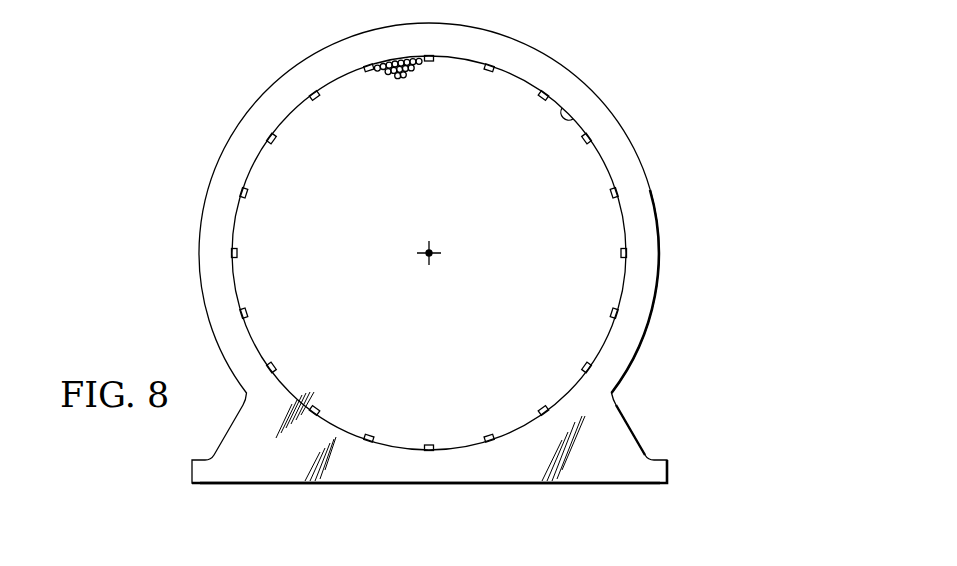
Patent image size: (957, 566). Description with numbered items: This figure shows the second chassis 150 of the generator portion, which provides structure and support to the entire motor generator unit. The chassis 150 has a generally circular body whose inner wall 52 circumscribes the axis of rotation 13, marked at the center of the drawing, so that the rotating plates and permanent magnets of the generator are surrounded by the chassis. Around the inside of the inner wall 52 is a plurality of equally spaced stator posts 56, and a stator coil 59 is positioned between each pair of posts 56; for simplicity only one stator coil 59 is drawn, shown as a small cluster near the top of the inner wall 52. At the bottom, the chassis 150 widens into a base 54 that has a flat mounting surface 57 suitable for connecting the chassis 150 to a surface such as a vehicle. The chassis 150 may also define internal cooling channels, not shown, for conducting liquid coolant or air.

The second chassis 150 is at (573, 52).
The inner wall 52 is at (577, 121).
The stator coil 59 is at (397, 70).
The axis of rotation 13 is at (436, 247).
The stator posts 56 is at (584, 366).
The base 54 is at (600, 447).
The mounting surface 57 is at (421, 484).